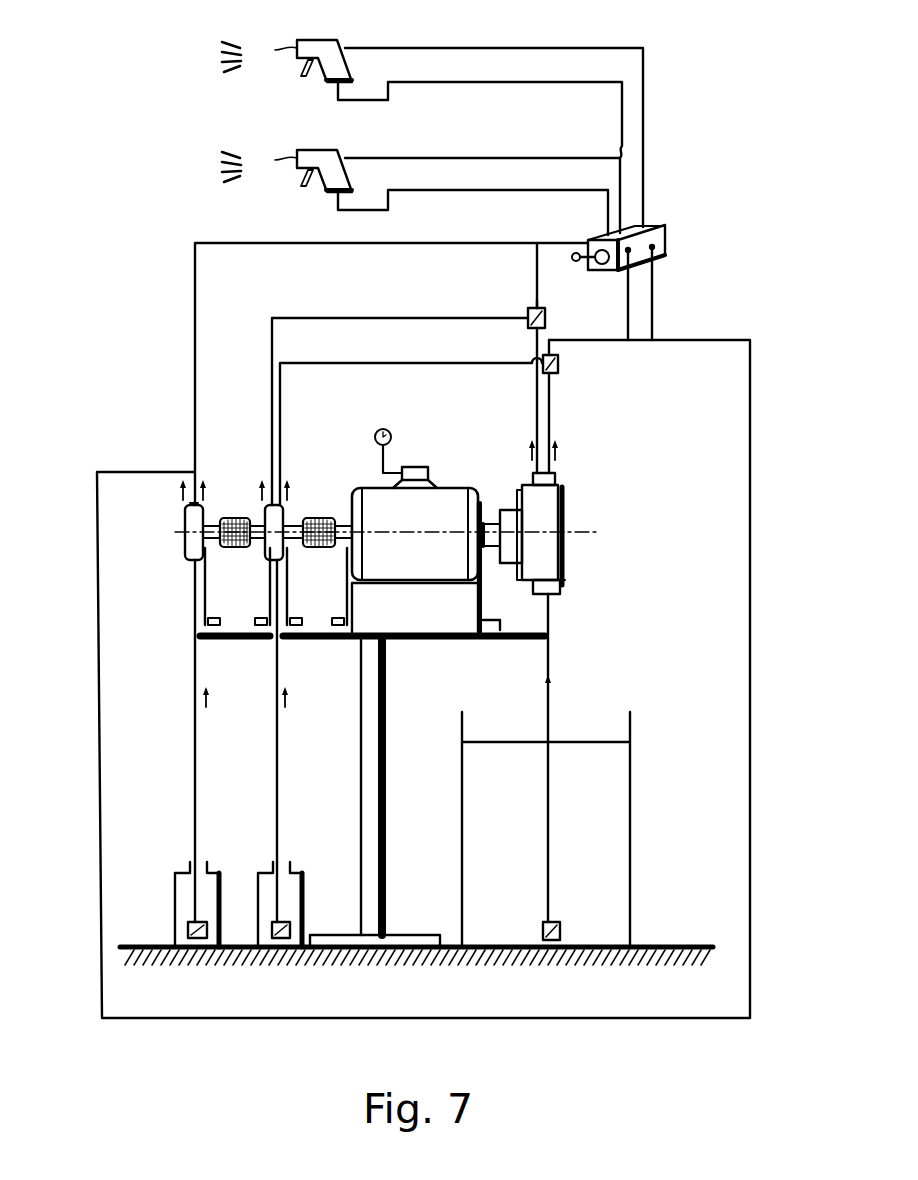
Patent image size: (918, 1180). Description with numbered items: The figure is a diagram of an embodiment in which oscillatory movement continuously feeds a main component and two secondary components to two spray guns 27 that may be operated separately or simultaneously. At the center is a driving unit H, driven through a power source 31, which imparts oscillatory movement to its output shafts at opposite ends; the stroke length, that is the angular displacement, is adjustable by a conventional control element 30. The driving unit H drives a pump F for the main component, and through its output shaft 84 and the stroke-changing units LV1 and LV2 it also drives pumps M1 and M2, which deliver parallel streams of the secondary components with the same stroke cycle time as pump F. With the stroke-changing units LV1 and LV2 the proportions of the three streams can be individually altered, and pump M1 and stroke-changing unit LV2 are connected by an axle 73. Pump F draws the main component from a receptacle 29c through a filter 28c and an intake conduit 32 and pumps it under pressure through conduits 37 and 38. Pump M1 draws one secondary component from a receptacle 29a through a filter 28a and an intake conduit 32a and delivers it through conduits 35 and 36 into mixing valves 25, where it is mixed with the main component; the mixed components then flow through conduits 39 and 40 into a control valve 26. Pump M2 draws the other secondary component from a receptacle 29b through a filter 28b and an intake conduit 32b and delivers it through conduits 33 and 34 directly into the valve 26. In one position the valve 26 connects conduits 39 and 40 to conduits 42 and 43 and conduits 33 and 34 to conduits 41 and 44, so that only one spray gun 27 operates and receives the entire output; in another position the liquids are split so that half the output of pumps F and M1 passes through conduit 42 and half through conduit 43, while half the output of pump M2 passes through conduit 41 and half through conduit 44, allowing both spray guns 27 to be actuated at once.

The spray gun 27 is at (287, 112).
The conduit 41 is at (548, 48).
The conduit 42 is at (495, 82).
The conduit 43 is at (455, 190).
The conduit 44 is at (428, 158).
The control valve 26 is at (668, 240).
The conduit 40 is at (620, 340).
The conduit 34 is at (195, 303).
The conduit 35 is at (272, 330).
The conduit 36 is at (387, 362).
The conduit 39 is at (540, 292).
The mixing valve 25 is at (545, 318).
The conduit 37 is at (537, 412).
The conduit 38 is at (549, 420).
The conduit 33 is at (750, 405).
The control element 30 is at (432, 462).
The power source 31 is at (385, 429).
The output shaft 84 is at (330, 517).
The axle 73 is at (251, 550).
The intake conduit 32 is at (549, 723).
The intake conduit 32a is at (321, 741).
The intake conduit 32b is at (195, 757).
The receptacle 29a is at (305, 880).
The receptacle 29b is at (206, 873).
The receptacle 29c is at (630, 790).
The filter 28a is at (290, 930).
The filter 28b is at (188, 930).
The filter 28c is at (560, 925).
The pump M1 is at (283, 512).
The pump M2 is at (185, 510).
The stroke-changing unit LV1 is at (312, 548).
The stroke-changing unit LV2 is at (219, 548).
The driving unit H is at (416, 570).
The pump F is at (548, 515).